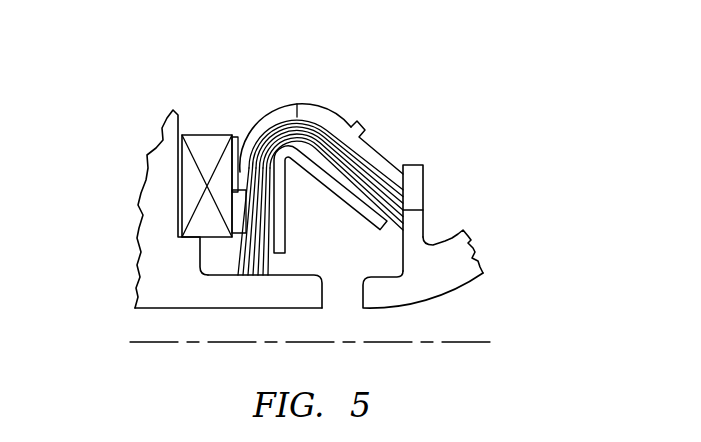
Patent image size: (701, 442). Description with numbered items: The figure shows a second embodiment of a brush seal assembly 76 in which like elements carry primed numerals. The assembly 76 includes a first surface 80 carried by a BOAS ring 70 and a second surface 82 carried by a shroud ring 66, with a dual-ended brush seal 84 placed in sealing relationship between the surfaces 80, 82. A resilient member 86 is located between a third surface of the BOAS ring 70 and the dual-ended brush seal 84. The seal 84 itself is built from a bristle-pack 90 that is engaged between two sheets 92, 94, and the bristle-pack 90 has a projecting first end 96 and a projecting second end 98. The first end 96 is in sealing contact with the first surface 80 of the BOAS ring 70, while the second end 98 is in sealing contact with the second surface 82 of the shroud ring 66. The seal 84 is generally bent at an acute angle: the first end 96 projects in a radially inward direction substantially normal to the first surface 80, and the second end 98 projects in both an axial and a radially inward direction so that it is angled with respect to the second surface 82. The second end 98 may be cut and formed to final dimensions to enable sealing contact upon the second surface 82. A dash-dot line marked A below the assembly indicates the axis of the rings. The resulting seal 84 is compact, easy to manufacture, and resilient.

The BOAS ring 70 is at (133, 263).
The first surface 80 is at (290, 277).
The resilient member 86 is at (207, 134).
The sheet 92 is at (267, 114).
The dual-ended brush seal 84 is at (320, 90).
The sheet 94 is at (285, 202).
The bristle-pack 90 is at (385, 156).
The first end 96 is at (260, 278).
The second end 98 is at (423, 207).
The second surface 82 is at (402, 248).
The shroud ring 66 is at (480, 245).
The brush seal assembly 76 is at (474, 98).
The axis A is at (463, 342).